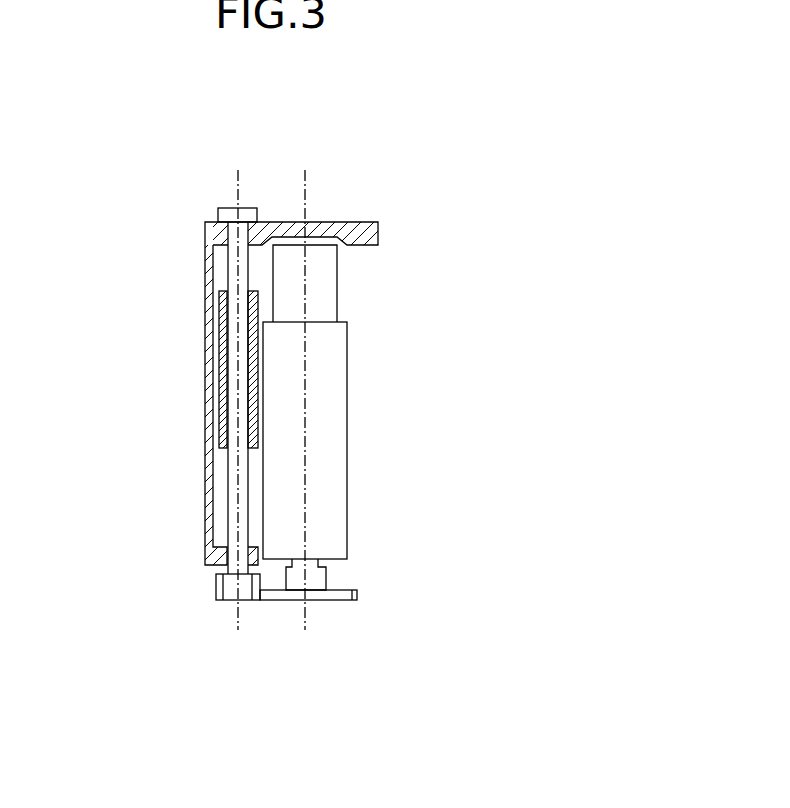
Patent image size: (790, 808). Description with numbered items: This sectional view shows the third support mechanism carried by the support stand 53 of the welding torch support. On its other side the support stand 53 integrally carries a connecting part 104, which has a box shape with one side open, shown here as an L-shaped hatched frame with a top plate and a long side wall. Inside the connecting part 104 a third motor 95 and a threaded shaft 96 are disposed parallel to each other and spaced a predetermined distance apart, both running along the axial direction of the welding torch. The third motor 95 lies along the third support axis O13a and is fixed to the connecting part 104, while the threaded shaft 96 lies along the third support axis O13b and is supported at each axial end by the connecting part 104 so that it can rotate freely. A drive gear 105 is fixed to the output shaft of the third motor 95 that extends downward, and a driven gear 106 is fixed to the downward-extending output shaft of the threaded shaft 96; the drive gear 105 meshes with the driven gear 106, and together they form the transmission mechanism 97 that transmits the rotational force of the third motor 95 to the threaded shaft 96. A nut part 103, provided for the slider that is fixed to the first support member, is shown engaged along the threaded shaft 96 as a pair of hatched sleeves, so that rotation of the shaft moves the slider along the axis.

The support stand 53 is at (343, 222).
The third motor 95 is at (330, 493).
The threaded shaft 96 is at (240, 257).
The transmission mechanism 97 is at (277, 655).
The nut part 103 is at (223, 357).
The connecting part 104 is at (207, 288).
The drive gear 105 is at (290, 597).
The driven gear 106 is at (230, 593).
The third support axis O13a is at (305, 187).
The third support axis O13b is at (238, 186).